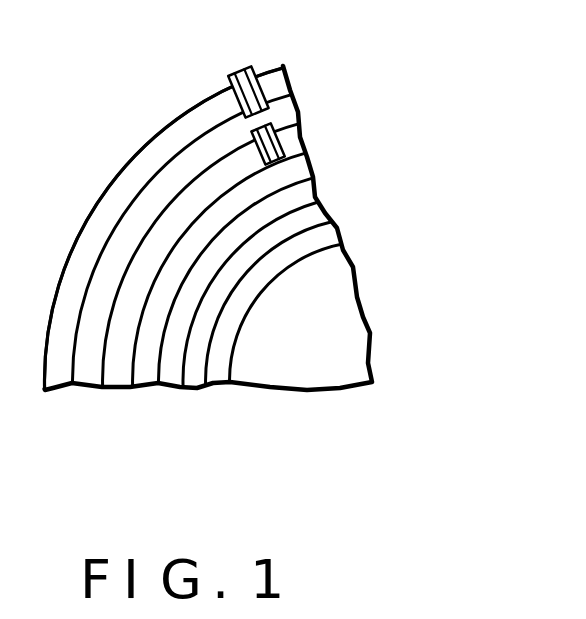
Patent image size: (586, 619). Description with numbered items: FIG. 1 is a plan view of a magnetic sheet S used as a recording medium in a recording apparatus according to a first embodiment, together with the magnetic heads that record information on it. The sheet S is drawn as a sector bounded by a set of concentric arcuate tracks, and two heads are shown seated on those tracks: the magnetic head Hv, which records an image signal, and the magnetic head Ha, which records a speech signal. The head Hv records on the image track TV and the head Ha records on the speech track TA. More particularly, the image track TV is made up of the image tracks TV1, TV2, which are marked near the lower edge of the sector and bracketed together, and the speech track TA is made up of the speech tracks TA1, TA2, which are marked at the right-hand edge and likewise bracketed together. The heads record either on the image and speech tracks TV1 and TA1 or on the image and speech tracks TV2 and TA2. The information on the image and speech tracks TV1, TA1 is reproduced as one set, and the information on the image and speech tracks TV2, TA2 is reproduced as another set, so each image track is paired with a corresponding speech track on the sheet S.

The magnetic sheet S is at (98, 197).
The magnetic head Hv is at (233, 80).
The magnetic head Ha is at (288, 140).
The speech track TA is at (407, 138).
The speech track TA1 is at (294, 146).
The speech track TA2 is at (320, 238).
The image track TV is at (207, 445).
The image track TV1 is at (57, 373).
The image track TV2 is at (172, 368).